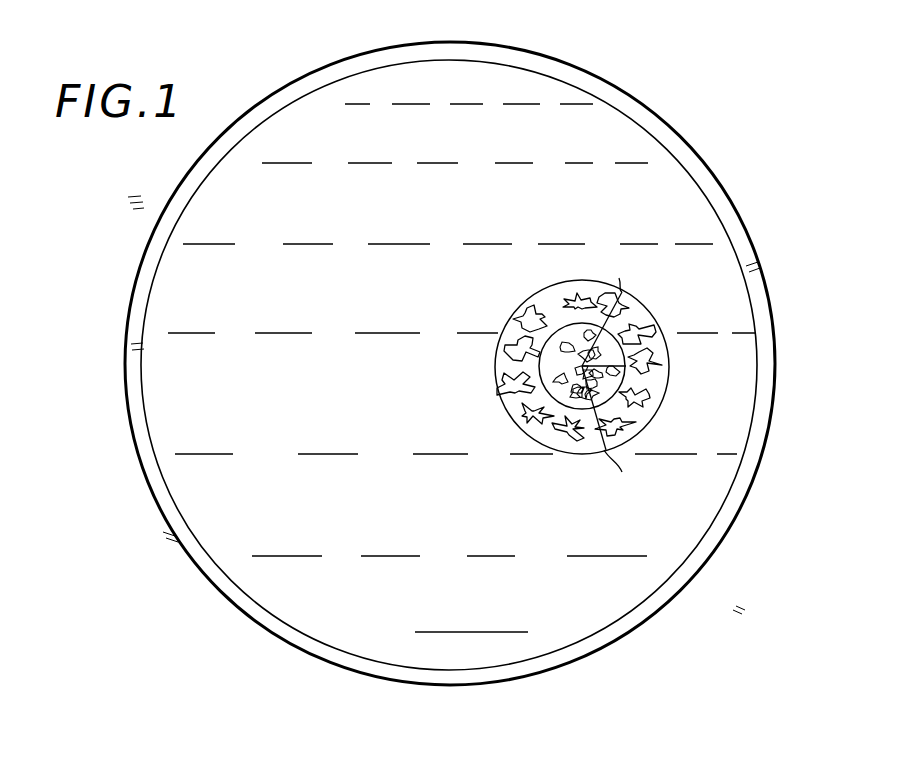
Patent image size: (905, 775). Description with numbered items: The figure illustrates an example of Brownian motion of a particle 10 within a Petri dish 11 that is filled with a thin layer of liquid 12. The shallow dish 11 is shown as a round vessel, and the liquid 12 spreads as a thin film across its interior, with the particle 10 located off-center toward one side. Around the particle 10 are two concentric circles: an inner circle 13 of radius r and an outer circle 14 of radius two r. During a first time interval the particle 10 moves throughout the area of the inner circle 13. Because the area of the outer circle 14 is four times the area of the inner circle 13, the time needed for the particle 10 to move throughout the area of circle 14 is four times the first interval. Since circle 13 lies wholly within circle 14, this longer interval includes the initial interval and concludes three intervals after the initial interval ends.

The particle 10 is at (606, 377).
The Petri dish 11 is at (752, 242).
The liquid 12 is at (687, 202).
The circle of radius r 13 is at (627, 341).
The circle of radius 2r 14 is at (668, 365).